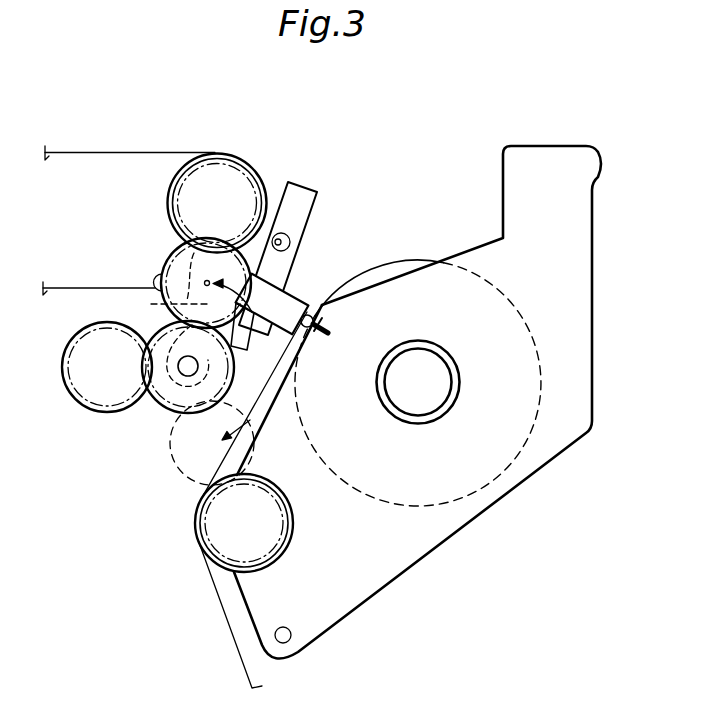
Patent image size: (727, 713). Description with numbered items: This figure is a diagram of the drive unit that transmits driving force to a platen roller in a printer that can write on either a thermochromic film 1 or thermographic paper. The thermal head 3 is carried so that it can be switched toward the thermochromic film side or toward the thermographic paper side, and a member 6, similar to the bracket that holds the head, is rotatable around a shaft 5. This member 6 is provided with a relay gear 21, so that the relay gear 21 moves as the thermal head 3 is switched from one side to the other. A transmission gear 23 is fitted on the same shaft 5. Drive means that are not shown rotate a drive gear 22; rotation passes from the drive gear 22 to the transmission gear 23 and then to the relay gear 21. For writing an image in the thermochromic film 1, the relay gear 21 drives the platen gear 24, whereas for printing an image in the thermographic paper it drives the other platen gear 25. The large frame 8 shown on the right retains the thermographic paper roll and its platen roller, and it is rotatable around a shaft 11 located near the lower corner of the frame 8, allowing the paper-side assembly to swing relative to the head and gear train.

The thermochromic film 1 is at (127, 153).
The thermal head 3 is at (300, 193).
The shaft 5 is at (198, 367).
The member 6 is at (171, 319).
The frame 8 is at (592, 228).
The shaft 11 is at (289, 643).
The relay gear 21 is at (177, 268).
The drive gear 22 is at (93, 390).
The transmission gear 23 is at (165, 390).
The platen gear 24 is at (240, 176).
The platen gear 25 is at (278, 525).